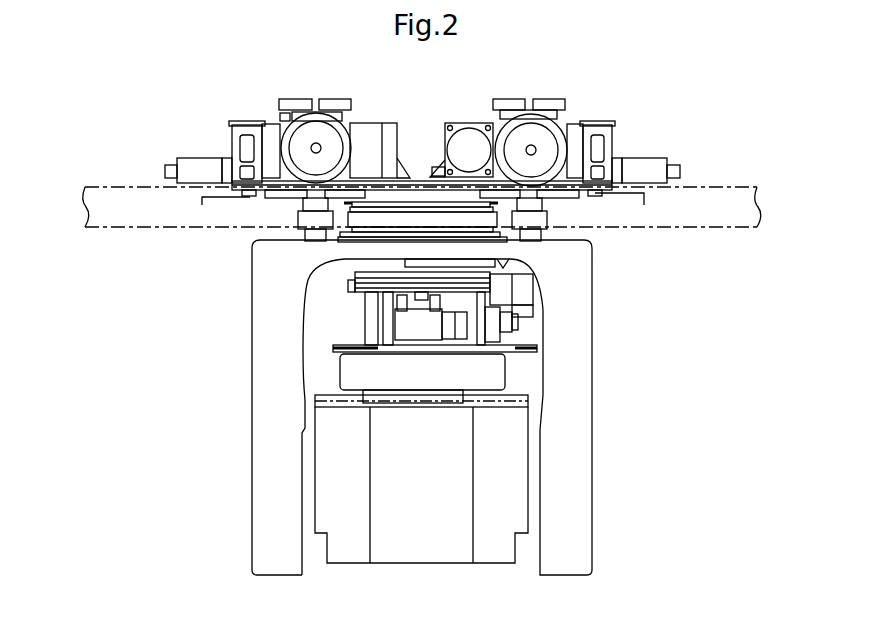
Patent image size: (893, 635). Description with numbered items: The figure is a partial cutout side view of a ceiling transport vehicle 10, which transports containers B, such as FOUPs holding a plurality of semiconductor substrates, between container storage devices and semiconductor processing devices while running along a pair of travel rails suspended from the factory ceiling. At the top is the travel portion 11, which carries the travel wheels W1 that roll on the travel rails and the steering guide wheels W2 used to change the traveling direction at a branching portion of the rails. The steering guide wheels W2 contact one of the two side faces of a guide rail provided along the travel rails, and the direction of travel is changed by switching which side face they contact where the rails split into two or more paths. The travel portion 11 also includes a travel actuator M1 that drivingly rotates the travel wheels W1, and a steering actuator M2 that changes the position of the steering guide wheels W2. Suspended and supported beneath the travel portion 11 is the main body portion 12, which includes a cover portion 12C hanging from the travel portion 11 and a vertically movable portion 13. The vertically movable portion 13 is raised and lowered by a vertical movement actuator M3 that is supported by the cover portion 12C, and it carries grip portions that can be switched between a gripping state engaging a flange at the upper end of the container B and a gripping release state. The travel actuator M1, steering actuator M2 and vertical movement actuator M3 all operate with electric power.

The ceiling transport vehicle 10 is at (225, 290).
The travel portion 11 is at (184, 143).
The main body portion 12 is at (597, 315).
The cover portion 12C is at (594, 400).
The vertically movable portion 13 is at (347, 373).
The container B is at (415, 550).
The travel actuator M1 is at (472, 142).
The steering actuator M2 is at (233, 135).
The vertical movement actuator M3 is at (353, 317).
The travel wheels W1 is at (297, 145).
The steering guide wheels W2 is at (299, 98).